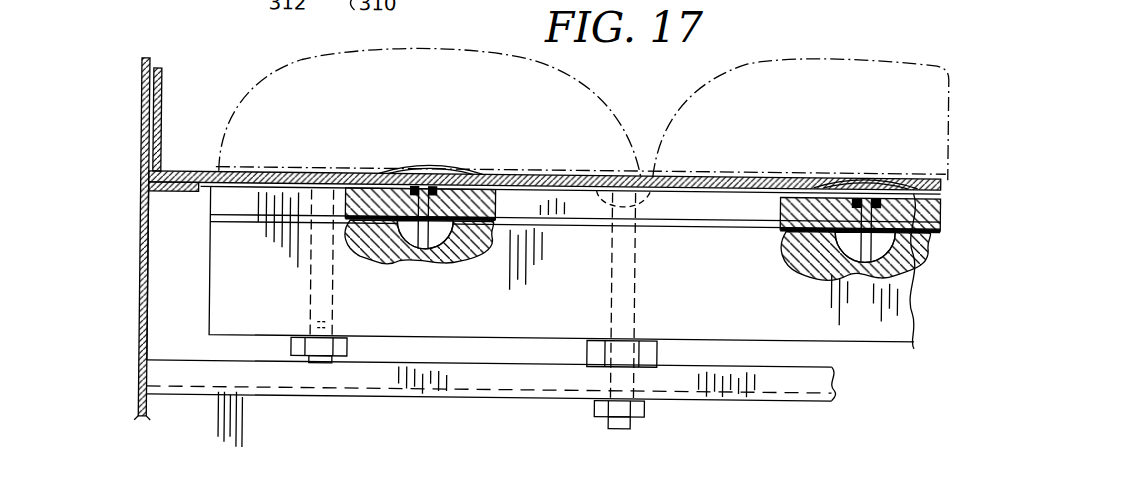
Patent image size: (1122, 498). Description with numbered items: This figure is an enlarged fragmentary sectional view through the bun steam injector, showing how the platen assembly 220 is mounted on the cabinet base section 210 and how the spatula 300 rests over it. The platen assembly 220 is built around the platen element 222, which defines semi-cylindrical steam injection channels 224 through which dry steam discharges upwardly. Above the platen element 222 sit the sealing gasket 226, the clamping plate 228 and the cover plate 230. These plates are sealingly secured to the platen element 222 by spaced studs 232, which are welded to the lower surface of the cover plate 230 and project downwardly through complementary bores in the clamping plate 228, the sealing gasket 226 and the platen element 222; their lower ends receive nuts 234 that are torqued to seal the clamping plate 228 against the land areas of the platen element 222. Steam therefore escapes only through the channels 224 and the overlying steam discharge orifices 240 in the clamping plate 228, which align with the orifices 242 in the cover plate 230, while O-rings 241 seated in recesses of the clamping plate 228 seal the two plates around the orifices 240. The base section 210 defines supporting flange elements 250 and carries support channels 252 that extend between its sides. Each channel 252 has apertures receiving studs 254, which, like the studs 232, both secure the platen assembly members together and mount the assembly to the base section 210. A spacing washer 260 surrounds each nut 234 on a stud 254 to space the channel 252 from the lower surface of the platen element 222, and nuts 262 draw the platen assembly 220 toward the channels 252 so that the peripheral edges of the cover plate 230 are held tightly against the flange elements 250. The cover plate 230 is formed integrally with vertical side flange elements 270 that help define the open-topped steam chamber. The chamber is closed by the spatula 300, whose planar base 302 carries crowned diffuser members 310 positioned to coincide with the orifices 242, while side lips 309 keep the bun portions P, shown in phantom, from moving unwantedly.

The bun portions P is at (459, 76).
The cabinet base section 210 is at (140, 250).
The platen assembly 220 is at (230, 314).
The platen element 222 is at (686, 294).
The steam injection channels 224 is at (386, 262).
The sealing gasket 226 is at (715, 224).
The clamping plate 228 is at (592, 215).
The cover plate 230 is at (598, 188).
The studs 232 is at (310, 280).
The nuts 234 is at (340, 346).
The steam discharge orifices 240 is at (430, 262).
The O-rings 241 is at (412, 186).
The orifices 242 is at (868, 196).
The supporting flange elements 250 is at (200, 194).
The support channels 252 is at (202, 378).
The studs 254 is at (612, 292).
The spacing washer 260 is at (588, 364).
The nuts 262 is at (655, 408).
The vertical side flange elements 270 is at (140, 114).
The spatula 300 is at (180, 170).
The planar base 302 is at (638, 176).
The side lips 309 is at (162, 100).
The diffuser member 310 is at (440, 164).